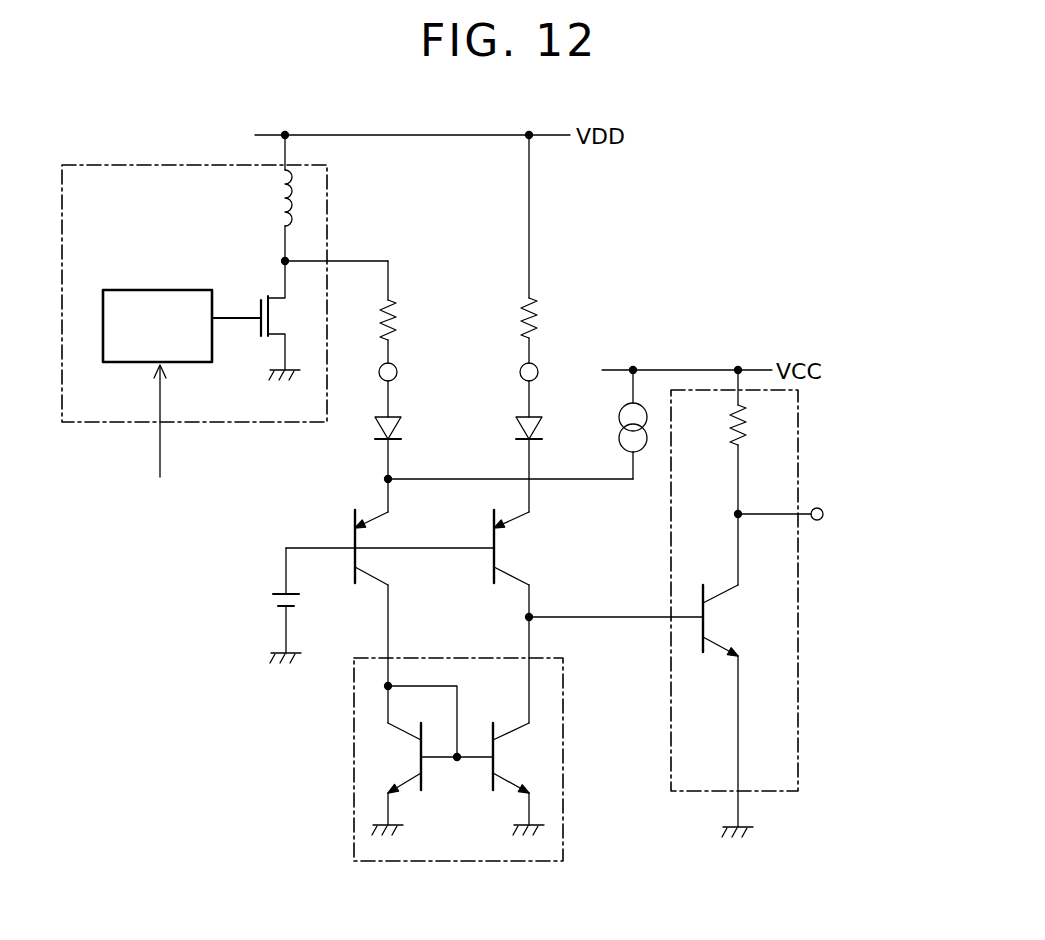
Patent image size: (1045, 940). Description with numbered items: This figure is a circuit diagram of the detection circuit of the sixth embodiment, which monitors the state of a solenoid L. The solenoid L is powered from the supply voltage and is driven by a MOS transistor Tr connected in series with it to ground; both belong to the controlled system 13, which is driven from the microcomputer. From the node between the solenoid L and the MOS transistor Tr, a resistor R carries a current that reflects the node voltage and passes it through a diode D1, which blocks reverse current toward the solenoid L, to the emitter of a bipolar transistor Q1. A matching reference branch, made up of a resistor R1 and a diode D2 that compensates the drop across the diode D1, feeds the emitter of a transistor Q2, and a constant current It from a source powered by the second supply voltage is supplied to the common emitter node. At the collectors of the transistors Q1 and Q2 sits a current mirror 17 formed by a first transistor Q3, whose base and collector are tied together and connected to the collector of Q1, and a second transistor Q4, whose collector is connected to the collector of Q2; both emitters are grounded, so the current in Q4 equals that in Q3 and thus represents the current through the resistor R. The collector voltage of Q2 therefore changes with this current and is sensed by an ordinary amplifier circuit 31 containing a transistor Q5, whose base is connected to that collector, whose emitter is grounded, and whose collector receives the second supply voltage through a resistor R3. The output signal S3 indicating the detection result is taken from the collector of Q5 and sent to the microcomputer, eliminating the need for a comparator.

The reader/transmitter circuit block 13 is at (194, 304).
The current mirror 17 is at (458, 791).
The amplifier circuit 31 is at (798, 618).
The solenoid L is at (293, 215).
The MOS transistor Tr is at (249, 333).
The resistor R is at (373, 312).
The resistor R1 is at (549, 249).
The resistor R3 is at (755, 442).
The diode D1 is at (408, 430).
The diode D2 is at (549, 446).
The bipolar transistor Q1 is at (398, 568).
The transistor Q2 is at (515, 548).
The first transistor Q3 is at (405, 769).
The second transistor Q4 is at (500, 762).
The transistor Q5 is at (714, 655).
The constant current It is at (647, 452).
The output signal S3 is at (768, 514).